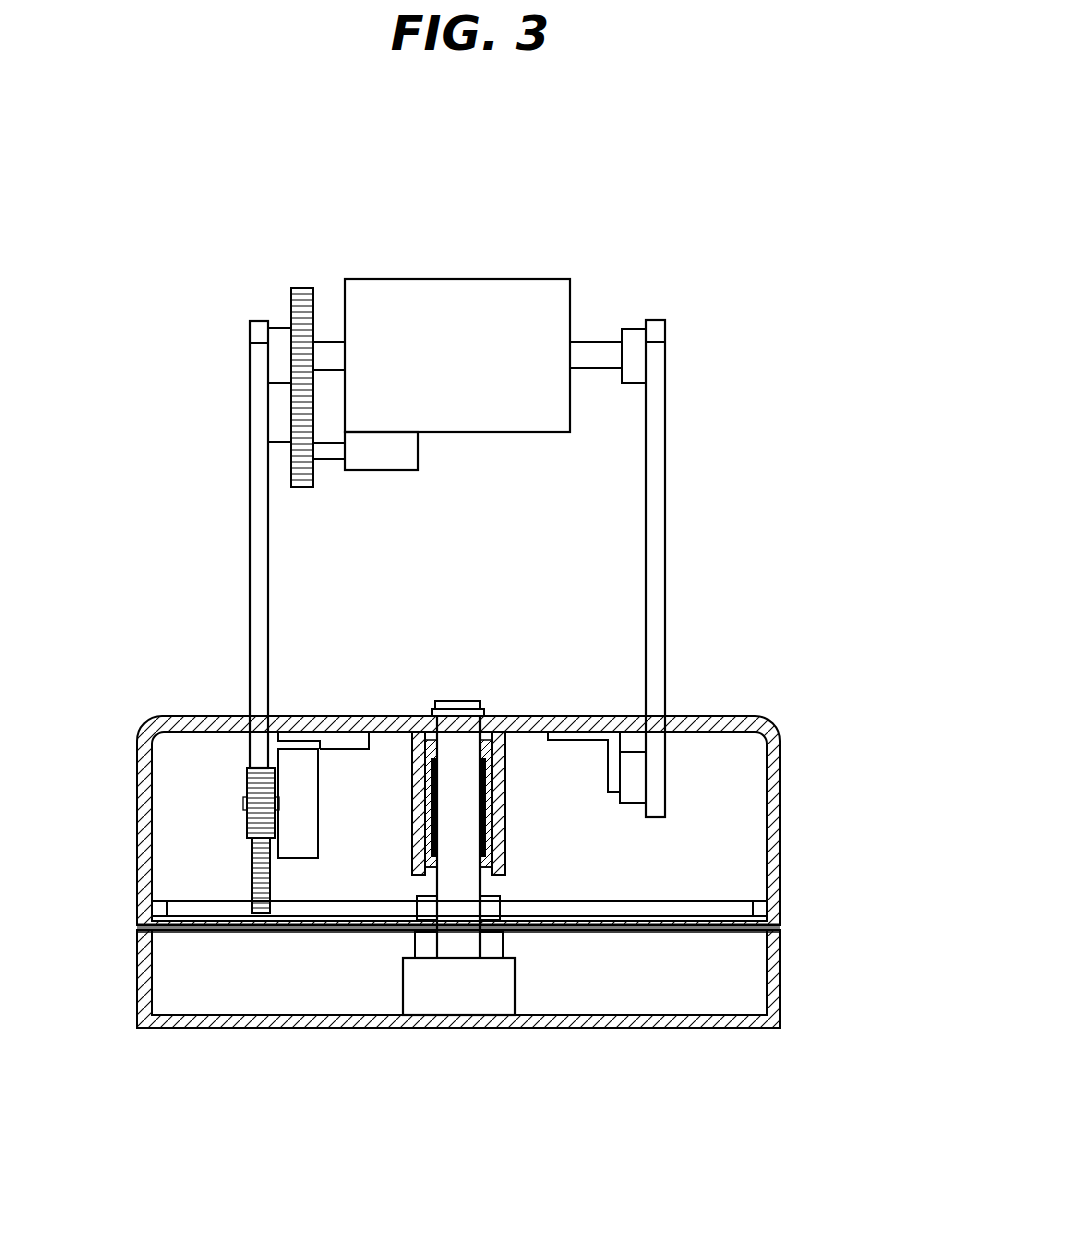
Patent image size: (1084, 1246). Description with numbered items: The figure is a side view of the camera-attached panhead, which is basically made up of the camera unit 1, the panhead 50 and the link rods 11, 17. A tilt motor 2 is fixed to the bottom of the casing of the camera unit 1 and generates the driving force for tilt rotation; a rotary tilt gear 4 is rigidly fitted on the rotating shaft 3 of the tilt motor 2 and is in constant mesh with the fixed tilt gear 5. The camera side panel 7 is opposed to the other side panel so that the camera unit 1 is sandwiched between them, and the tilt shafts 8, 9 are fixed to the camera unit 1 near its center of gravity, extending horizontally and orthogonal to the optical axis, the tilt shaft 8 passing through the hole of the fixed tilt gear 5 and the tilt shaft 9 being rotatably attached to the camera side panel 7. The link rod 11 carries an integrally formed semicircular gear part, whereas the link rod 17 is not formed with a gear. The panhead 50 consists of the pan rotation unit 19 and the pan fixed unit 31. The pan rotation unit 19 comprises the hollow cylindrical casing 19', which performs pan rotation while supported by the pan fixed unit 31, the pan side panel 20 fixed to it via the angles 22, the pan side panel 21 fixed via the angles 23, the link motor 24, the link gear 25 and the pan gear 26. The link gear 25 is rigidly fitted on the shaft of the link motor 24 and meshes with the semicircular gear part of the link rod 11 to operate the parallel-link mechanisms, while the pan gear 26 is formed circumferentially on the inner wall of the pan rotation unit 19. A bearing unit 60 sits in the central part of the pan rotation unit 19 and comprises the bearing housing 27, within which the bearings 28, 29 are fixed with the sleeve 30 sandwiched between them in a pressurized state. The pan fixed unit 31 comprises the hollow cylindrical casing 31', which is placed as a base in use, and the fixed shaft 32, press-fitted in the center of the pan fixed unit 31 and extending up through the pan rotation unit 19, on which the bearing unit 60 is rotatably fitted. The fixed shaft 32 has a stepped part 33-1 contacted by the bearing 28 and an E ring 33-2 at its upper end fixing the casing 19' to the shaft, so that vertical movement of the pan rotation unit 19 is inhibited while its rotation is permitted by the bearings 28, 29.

The camera unit 1 is at (400, 278).
The tilt motor 2 is at (380, 460).
The rotating shaft 3 is at (330, 455).
The rotary tilt gear 4 is at (292, 442).
The fixed tilt gear 5 is at (300, 287).
The camera side panel 7 is at (637, 343).
The tilt shaft 8 is at (330, 345).
The tilt shaft 9 is at (598, 355).
The link rod 11 is at (260, 400).
The link rod 17 is at (657, 408).
The pan rotation unit 19 is at (510, 820).
The hollow cylindrical casing 19' is at (524, 700).
The pan side panel 20 is at (278, 745).
The pan side panel 21 is at (633, 790).
The angles 22 is at (343, 747).
The angles 23 is at (570, 740).
The link motor 24 is at (299, 848).
The link gear 25 is at (258, 825).
The pan gear 26 is at (643, 905).
The bearing housing 27 is at (512, 757).
The bearing 28 is at (490, 878).
The bearing 29 is at (492, 740).
The sleeve 30 is at (430, 838).
The pan fixed unit 31 is at (510, 978).
The hollow cylindrical casing 31' is at (517, 1041).
The fixed shaft 32 is at (468, 943).
The stepped part 33-1 is at (438, 868).
The E ring 33-2 is at (430, 712).
The panhead 50 is at (890, 895).
The bearing unit 60 is at (512, 840).